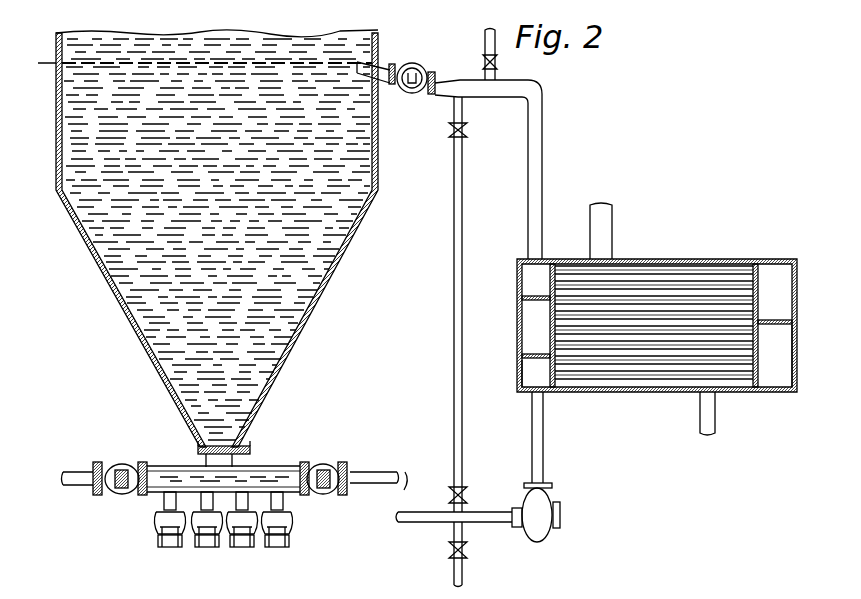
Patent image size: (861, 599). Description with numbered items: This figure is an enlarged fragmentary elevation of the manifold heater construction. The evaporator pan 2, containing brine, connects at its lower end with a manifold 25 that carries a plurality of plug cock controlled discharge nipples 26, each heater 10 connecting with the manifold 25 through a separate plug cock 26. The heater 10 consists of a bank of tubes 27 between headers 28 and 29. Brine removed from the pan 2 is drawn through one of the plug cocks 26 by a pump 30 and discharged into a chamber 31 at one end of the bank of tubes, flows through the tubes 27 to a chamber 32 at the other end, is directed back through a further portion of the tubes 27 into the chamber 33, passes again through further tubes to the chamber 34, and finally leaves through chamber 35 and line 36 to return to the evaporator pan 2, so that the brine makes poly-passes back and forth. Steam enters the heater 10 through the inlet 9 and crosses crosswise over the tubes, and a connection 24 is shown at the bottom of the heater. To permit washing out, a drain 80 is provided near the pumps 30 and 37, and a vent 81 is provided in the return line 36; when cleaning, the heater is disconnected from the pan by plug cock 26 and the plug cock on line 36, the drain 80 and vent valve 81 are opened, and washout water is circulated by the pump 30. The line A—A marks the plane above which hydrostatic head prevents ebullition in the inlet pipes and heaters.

The evaporator pan 2 is at (378, 152).
The steam inlet 9 is at (612, 214).
The heater 10 is at (622, 397).
The outlet pipe 24 is at (698, 440).
The manifold 25 is at (276, 467).
The plug cock 26 is at (333, 465).
The tubes 27 is at (660, 290).
The header 28 is at (553, 262).
The header 29 is at (757, 262).
The pump 30 is at (545, 538).
The chamber 31 is at (530, 377).
The chamber 32 is at (778, 375).
The chamber 33 is at (540, 334).
The chamber 34 is at (782, 300).
The chamber 35 is at (522, 284).
The line 36 is at (515, 90).
The pump 37 is at (463, 153).
The drain 80 is at (453, 541).
The vent 81 is at (485, 39).